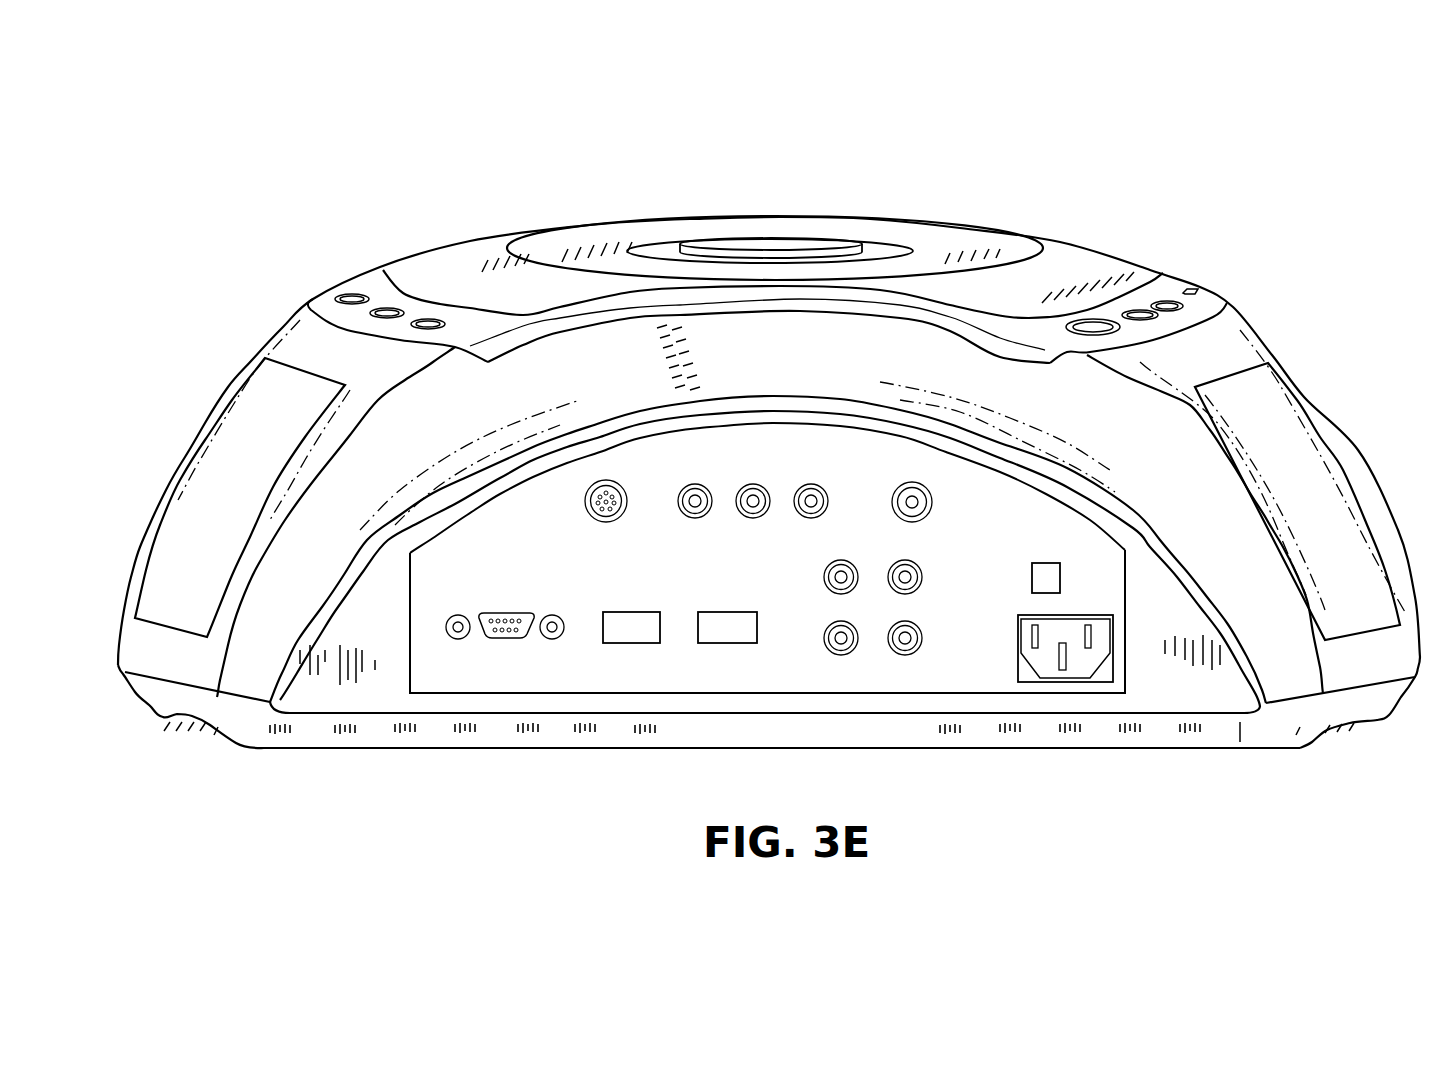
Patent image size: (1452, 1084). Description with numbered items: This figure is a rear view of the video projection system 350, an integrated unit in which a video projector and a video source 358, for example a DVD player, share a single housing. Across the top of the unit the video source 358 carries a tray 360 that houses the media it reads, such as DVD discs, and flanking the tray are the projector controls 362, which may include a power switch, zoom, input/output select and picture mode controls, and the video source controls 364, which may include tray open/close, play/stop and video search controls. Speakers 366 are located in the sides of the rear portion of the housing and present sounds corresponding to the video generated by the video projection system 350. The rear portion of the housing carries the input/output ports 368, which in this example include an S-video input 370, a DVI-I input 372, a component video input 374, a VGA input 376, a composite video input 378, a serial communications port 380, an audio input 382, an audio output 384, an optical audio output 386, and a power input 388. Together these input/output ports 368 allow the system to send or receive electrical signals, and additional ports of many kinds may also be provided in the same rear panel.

The video projection system 350 is at (796, 169).
The video source 358 is at (1087, 255).
The tray 360 is at (815, 216).
The projector controls 362 is at (1200, 292).
The video source controls 364 is at (347, 275).
The speakers 366 is at (200, 492).
The input/output ports 368 is at (670, 678).
The S-video input 370 is at (583, 500).
The DVI-I input 372 is at (500, 612).
The component video input 374 is at (803, 486).
The VGA input 376 is at (625, 611).
The composite video input 378 is at (933, 499).
The RS-232 port 380 is at (723, 611).
The audio input 382 is at (893, 559).
The audio output 384 is at (892, 654).
The optical audio output 386 is at (1030, 576).
The power input 388 is at (1020, 661).